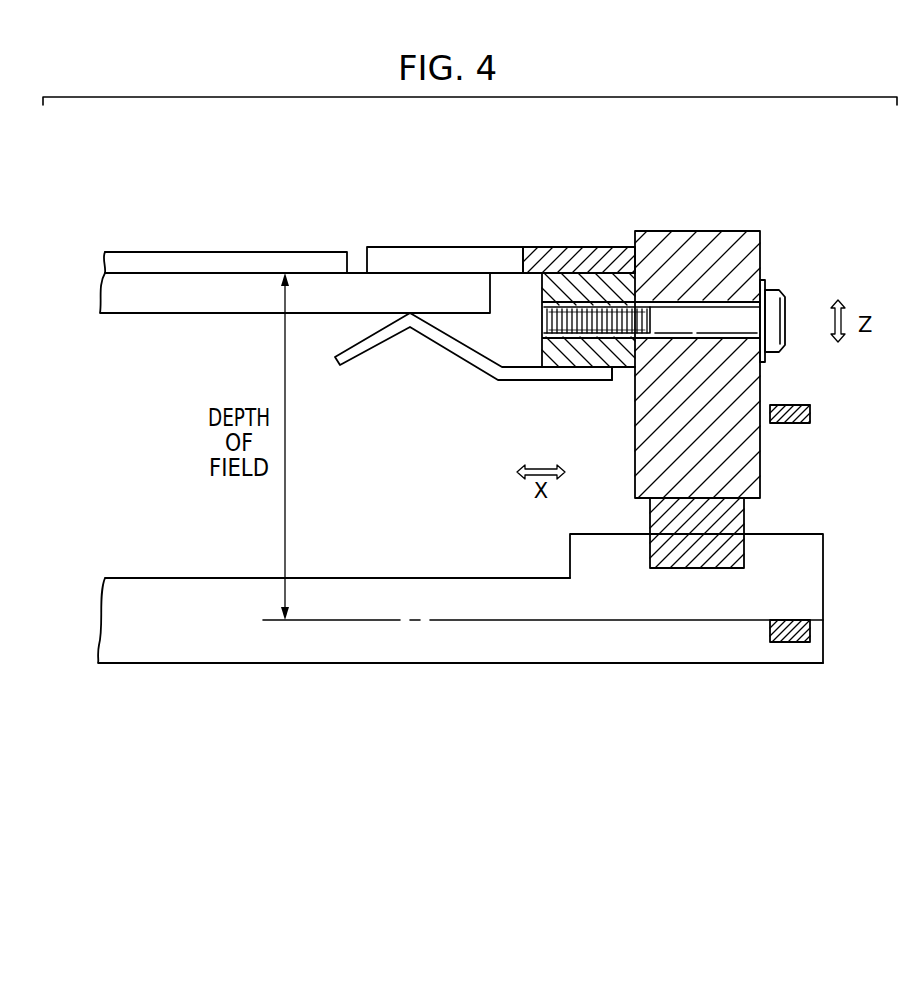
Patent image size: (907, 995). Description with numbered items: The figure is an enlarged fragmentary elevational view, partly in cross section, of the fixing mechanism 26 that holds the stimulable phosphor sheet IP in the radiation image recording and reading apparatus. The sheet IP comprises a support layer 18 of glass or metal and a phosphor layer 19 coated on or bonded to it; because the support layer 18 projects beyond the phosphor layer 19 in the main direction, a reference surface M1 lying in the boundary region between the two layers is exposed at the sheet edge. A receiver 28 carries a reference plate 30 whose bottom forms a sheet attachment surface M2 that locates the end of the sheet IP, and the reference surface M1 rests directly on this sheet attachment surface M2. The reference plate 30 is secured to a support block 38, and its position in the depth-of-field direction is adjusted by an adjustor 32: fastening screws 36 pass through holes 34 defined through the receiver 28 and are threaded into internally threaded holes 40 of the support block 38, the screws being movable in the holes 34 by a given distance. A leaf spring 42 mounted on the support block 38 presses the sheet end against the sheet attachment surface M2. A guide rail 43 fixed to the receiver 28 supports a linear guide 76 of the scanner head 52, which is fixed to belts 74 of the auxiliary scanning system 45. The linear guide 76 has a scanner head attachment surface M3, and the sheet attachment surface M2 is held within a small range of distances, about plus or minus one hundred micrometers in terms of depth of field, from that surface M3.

The fixing mechanism 26 is at (777, 136).
The stimulable phosphor sheet IP is at (185, 249).
The phosphor layer 19 is at (217, 267).
The reference surface M1 is at (312, 270).
The sheet attachment surface M2 is at (506, 283).
The support layer 18 is at (198, 297).
The reference plate 30 is at (553, 258).
The receiver 28 is at (661, 226).
The hole 34 is at (724, 310).
The adjustor 32 is at (788, 276).
The fastening screw 36 is at (777, 322).
The support block 38 is at (555, 368).
The internally threaded hole 40 is at (597, 336).
The leaf spring 42 is at (453, 355).
The belt 74 is at (812, 414).
The guide rail 43 is at (725, 528).
The linear guide 76 is at (780, 581).
The auxiliary scanning system 45 is at (850, 625).
The scanner head 52 is at (300, 667).
The scanner head attachment surface M3 is at (626, 622).